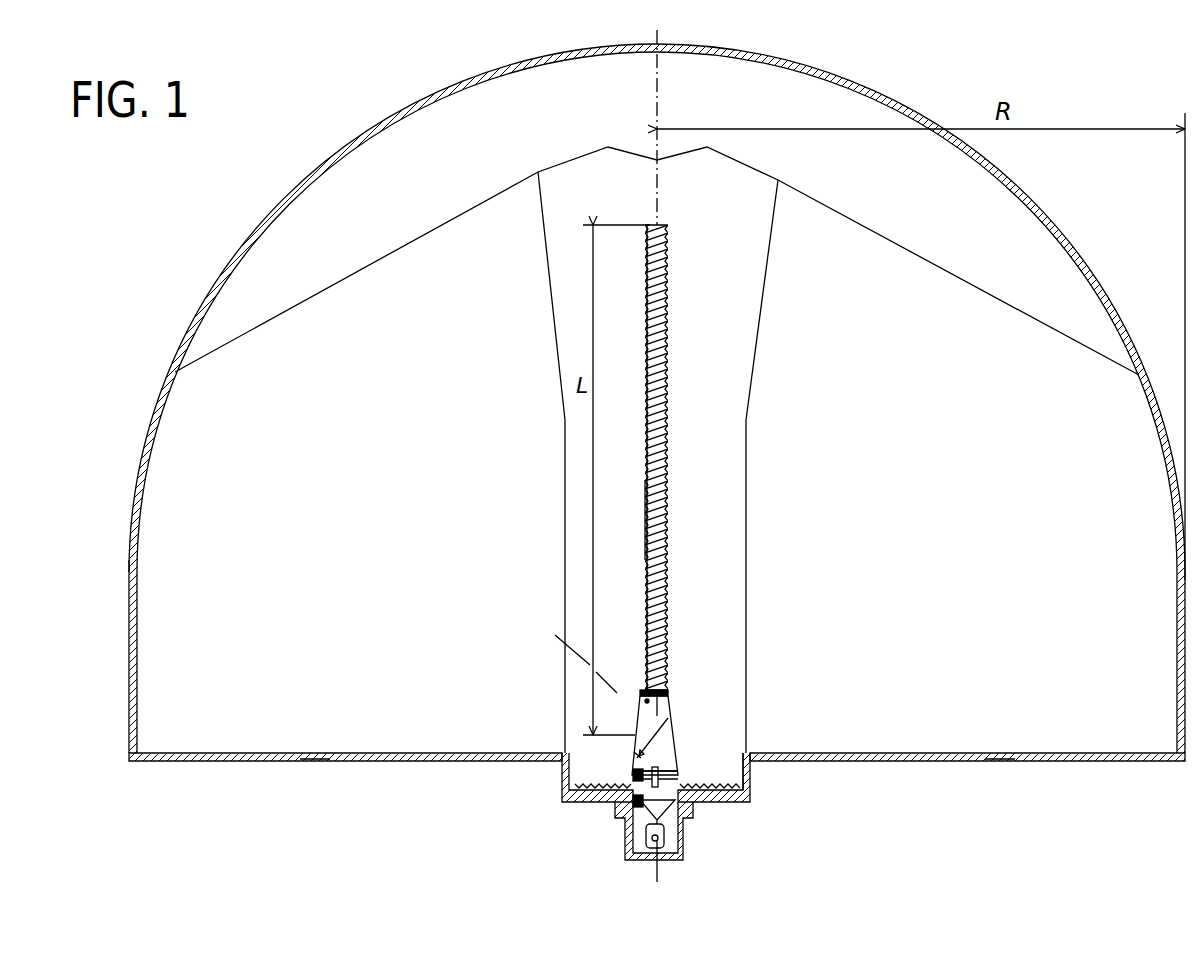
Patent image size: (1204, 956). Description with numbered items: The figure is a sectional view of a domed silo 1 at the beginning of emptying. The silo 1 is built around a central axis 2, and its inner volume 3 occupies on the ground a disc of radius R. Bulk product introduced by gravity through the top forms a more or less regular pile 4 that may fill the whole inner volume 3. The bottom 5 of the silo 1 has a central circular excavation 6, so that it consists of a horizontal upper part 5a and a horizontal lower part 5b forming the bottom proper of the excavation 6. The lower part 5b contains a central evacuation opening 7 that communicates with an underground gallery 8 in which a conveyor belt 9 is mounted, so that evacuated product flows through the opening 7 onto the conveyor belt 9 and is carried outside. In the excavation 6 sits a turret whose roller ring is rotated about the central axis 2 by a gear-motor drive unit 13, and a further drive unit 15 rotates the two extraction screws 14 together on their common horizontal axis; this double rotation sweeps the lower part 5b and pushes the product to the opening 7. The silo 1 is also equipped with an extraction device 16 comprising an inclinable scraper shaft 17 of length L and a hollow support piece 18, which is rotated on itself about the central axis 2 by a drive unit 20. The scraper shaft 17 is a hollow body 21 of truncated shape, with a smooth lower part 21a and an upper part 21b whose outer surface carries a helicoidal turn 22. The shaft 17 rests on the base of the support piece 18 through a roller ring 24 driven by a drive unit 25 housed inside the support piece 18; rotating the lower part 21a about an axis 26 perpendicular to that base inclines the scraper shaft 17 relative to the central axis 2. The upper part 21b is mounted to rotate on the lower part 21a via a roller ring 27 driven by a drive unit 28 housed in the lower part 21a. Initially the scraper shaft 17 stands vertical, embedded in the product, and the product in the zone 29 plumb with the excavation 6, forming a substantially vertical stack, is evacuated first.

The domed silo 1 is at (201, 303).
The central axis 2 is at (657, 84).
The inner volume 3 is at (412, 146).
The pile of bulk product 4 is at (381, 247).
The bottom 5 is at (420, 747).
The horizontal upper part 5a is at (306, 758).
The horizontal lower part 5b is at (576, 801).
The central circular excavation 6 is at (746, 763).
The central evacuation opening 7 is at (688, 823).
The underground gallery 8 is at (643, 843).
The conveyor belt 9 is at (663, 850).
The drive unit 13 is at (630, 801).
The extraction screws 14 is at (562, 786).
The drive unit 15 is at (660, 768).
The extraction device 16 is at (741, 630).
The scraper shaft 17 is at (691, 453).
The support piece 18 is at (664, 742).
The drive unit 20 is at (635, 777).
The hollow body 21 is at (670, 598).
The smooth lower part 21a is at (668, 706).
The upper part 21b is at (672, 537).
The helicoidal turn 22 is at (668, 365).
The roller ring 24 is at (669, 719).
The drive unit 25 is at (638, 756).
The axis 26 is at (546, 623).
The roller ring 27 is at (668, 694).
The drive unit 28 is at (646, 699).
The zone 29 is at (718, 400).